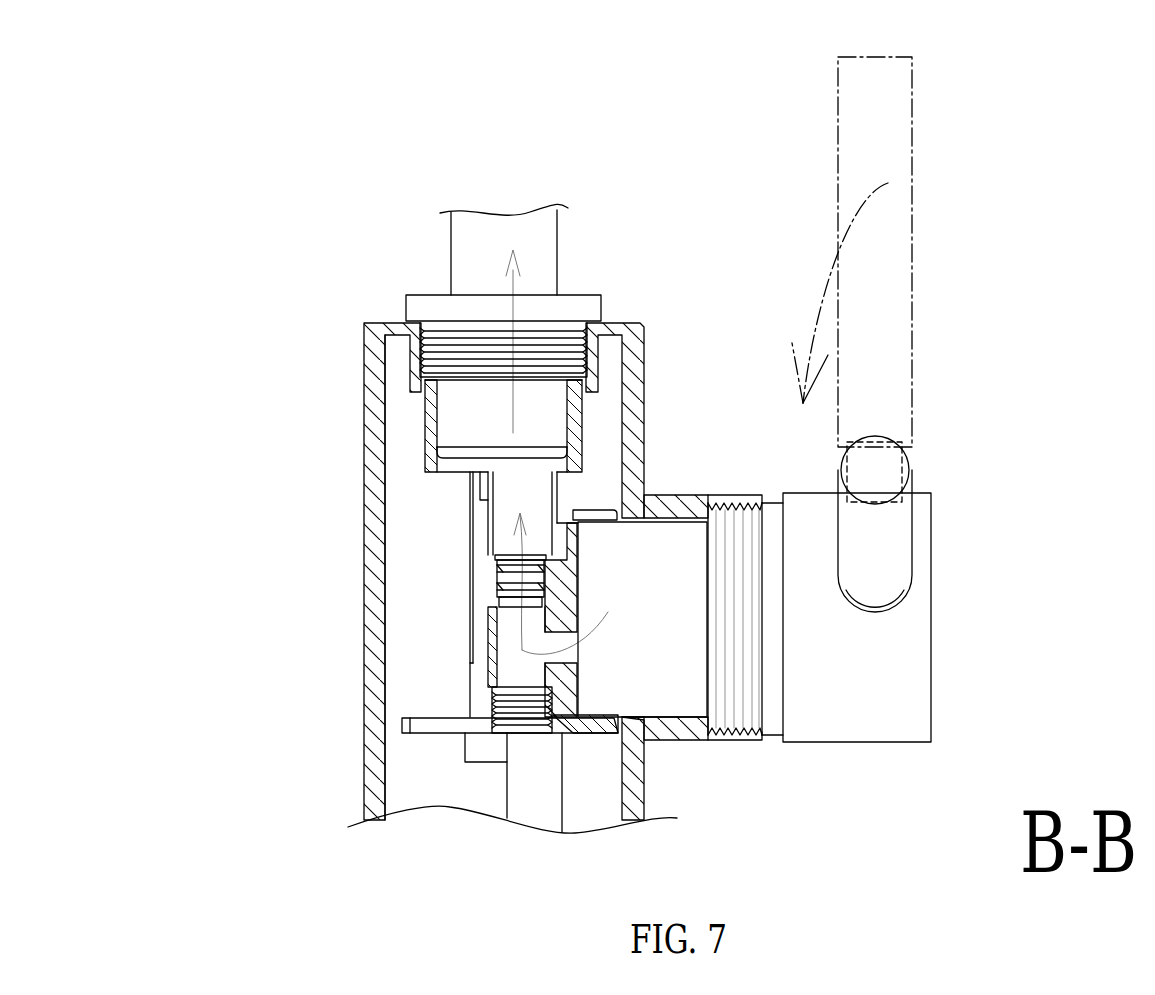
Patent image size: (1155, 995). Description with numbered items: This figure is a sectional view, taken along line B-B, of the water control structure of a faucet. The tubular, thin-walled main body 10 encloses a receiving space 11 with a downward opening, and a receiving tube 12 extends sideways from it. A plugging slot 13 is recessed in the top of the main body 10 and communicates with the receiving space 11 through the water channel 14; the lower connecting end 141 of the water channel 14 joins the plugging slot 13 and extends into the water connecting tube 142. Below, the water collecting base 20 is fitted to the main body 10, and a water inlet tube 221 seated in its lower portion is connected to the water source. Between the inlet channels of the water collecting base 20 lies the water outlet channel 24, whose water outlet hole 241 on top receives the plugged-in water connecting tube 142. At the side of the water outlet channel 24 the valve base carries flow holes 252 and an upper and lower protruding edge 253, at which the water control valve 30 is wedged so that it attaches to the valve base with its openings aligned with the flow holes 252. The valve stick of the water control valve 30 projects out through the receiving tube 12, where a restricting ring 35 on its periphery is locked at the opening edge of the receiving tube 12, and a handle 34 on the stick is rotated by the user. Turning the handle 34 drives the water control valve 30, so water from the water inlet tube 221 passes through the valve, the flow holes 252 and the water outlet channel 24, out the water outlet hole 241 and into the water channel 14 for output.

The main body 10 is at (363, 480).
The receiving space 11 is at (450, 652).
The receiving tube 12 is at (673, 507).
The plugging slot 13 is at (423, 342).
The connecting end 141 is at (503, 350).
The water connecting tube 142 is at (487, 575).
The water outlet hole 241 is at (520, 577).
The water channel 14 is at (532, 252).
The water collecting base 20 is at (437, 722).
The water inlet tube 221 is at (531, 807).
The water outlet channel 24 is at (492, 600).
The flow hole 252 is at (640, 712).
The protruding edge 253 is at (592, 510).
The water control valve 30 is at (700, 525).
The handle 34 is at (920, 607).
The restricting ring 35 is at (743, 697).